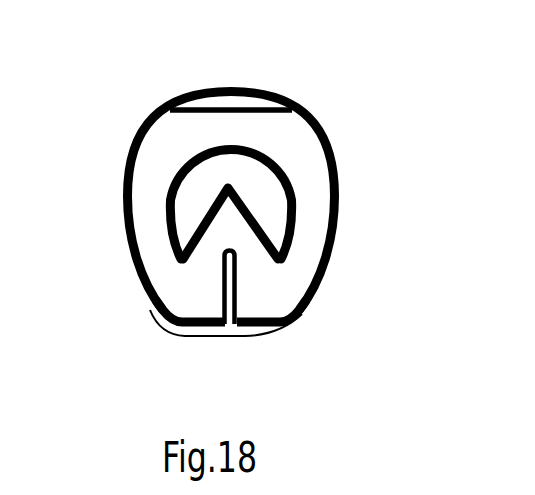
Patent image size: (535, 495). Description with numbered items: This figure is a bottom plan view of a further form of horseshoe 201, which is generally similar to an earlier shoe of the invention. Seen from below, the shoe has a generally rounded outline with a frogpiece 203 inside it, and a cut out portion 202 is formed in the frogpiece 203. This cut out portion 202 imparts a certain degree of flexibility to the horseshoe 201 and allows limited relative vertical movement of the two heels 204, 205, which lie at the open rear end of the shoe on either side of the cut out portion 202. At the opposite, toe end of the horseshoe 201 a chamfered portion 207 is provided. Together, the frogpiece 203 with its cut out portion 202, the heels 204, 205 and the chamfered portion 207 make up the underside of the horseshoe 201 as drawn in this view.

The horseshoe 201 is at (158, 281).
The cut out portion 202 is at (228, 313).
The frogpiece 203 is at (228, 200).
The heel 204 is at (193, 316).
The heel 205 is at (270, 313).
The chamfered portion 207 is at (228, 100).